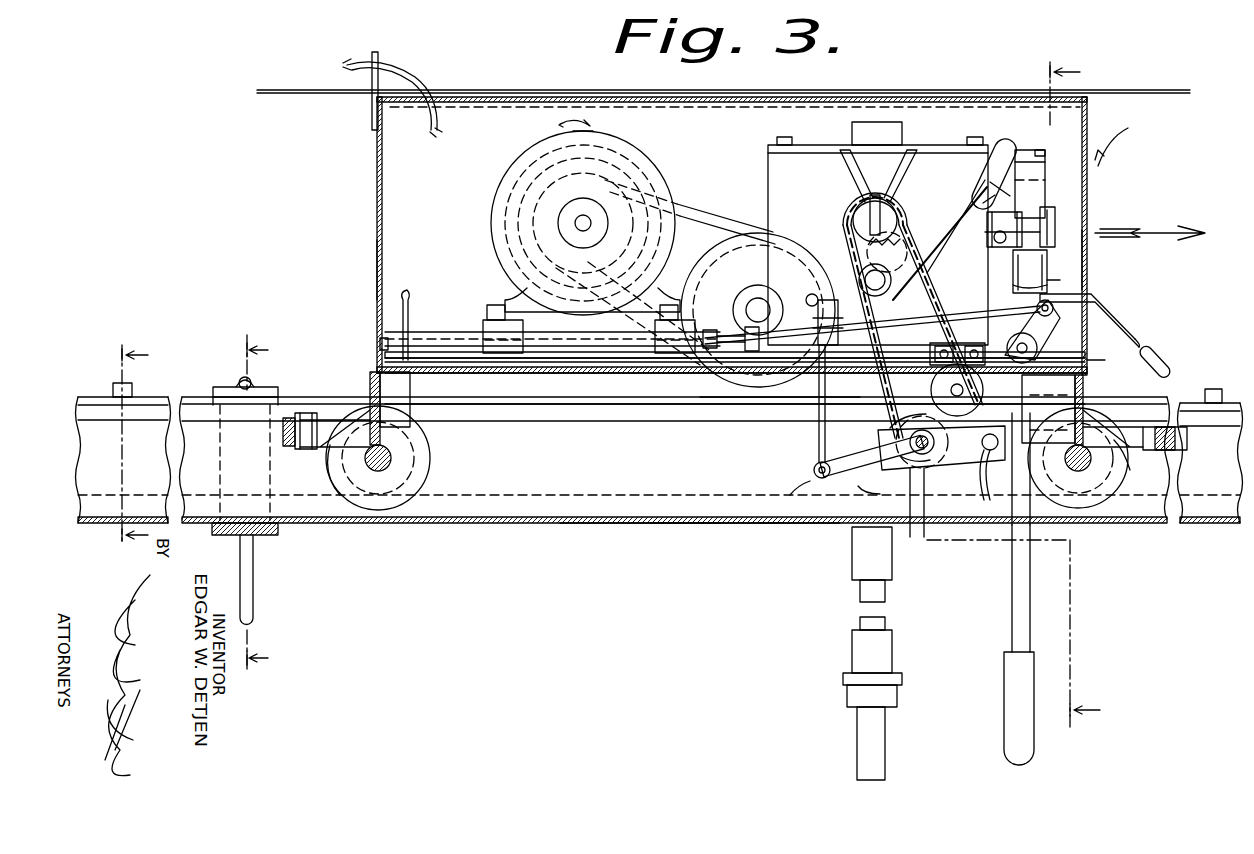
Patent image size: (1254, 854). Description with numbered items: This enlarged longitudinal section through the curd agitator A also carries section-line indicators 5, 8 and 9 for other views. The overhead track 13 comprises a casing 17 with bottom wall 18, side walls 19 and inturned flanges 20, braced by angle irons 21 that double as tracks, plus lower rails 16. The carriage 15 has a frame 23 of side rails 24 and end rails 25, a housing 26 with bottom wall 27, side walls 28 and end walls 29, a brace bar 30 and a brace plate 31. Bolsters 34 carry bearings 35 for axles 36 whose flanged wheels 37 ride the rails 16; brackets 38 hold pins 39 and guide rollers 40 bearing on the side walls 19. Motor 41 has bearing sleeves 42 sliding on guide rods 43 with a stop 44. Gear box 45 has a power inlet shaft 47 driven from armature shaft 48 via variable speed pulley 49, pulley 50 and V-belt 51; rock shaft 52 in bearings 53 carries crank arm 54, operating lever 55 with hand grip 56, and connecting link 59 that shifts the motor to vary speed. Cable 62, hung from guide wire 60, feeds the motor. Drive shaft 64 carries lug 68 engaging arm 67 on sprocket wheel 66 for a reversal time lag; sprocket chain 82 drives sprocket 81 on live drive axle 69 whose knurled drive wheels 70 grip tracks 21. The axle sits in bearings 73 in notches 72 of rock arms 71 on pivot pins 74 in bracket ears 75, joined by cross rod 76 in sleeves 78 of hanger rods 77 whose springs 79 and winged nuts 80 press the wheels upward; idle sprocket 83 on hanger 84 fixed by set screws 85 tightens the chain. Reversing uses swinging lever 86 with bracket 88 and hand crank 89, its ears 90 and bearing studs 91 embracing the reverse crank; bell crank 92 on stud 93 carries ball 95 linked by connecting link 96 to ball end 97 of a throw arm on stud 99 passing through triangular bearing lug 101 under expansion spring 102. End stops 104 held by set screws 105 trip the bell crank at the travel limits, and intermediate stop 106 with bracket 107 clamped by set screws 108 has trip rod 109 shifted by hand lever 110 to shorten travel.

The section line 5 is at (1013, 393).
The section line 8 is at (245, 503).
The section line 9 is at (124, 446).
The overhead track 13 is at (545, 526).
The carriage 15 is at (372, 261).
The rails 16 is at (635, 525).
The casing 17 is at (745, 525).
The bottom wall 18 is at (780, 530).
The side walls 19 is at (690, 525).
The top inturned flanges 20 is at (572, 392).
The angle irons 21 is at (640, 430).
The bottom open frame 23 is at (375, 330).
The side rails 24 is at (455, 378).
The end rails 25 is at (1090, 358).
The housing 26 is at (1098, 269).
The bottom wall 27 is at (690, 378).
The side walls 28 is at (382, 210).
The end walls 29 is at (1088, 192).
The brace bar 30 is at (468, 314).
The brace plate 31 is at (780, 405).
The bolsters 34 is at (1092, 378).
The bearings 35 is at (1088, 456).
The axles 36 is at (1066, 468).
The flanged carriage wheels 37 is at (1125, 478).
The brackets 38 is at (1123, 453).
The upright pins 39 is at (1187, 407).
The guide rollers 40 is at (1189, 440).
The electric motor 41 is at (636, 156).
The bearing sleeves 42 is at (664, 358).
The guide rods 43 is at (588, 352).
The stop 44 is at (735, 352).
The gear box 45 is at (770, 166).
The power inlet shaft 47 is at (763, 306).
The armature shaft 48 is at (590, 224).
The variable speed pulley 49 is at (780, 266).
The pulley 50 is at (535, 206).
The V-shaped pulley belt 51 is at (745, 185).
The rock shaft 52 is at (1034, 350).
The bearings 53 is at (1118, 325).
The crank arm 54 is at (1102, 298).
The operating lever 55 is at (1010, 584).
The hand grip 56 is at (1007, 674).
The connecting link 59 is at (1020, 310).
The guide wire 60 is at (1172, 92).
The cable 62 is at (430, 68).
The main drive shaft 64 is at (895, 206).
The sprocket wheel 66 is at (892, 236).
The arm 67 is at (865, 209).
The lug 68 is at (905, 190).
The live drive axle 69 is at (931, 462).
The drive wheels 70 is at (903, 525).
The rock arms 71 is at (868, 464).
The notches 72 is at (950, 462).
The bearings 73 is at (883, 437).
The pivot pins 74 is at (983, 494).
The bracket ears 75 is at (1014, 491).
The cross rod 76 is at (812, 470).
The hanger rods 77 is at (811, 444).
The sleeves 78 is at (815, 500).
The expansion coil springs 79 is at (815, 312).
The winged nuts 80 is at (858, 274).
The drive sprocket 81 is at (929, 370).
The sprocket chain 82 is at (934, 294).
The idle sprocket 83 is at (1035, 322).
The hanger 84 is at (936, 358).
The set screws 85 is at (928, 354).
The swinging lever 86 is at (1045, 211).
The depending bracket 88 is at (1056, 252).
The hand crank 89 is at (1162, 348).
The spaced ears 90 is at (992, 241).
The bearing studs 91 is at (1048, 276).
The bell crank 92 is at (950, 260).
The stud 93 is at (942, 290).
The ball 95 is at (1044, 180).
The connecting link 96 is at (1046, 162).
The ball end 97 is at (1015, 148).
The stud 99 is at (1058, 232).
The triangular bearing lug 101 is at (1044, 150).
The expansion spring 102 is at (985, 185).
The end stops 104 is at (1218, 386).
The set screws 105 is at (118, 425).
The intermediate stop 106 is at (288, 381).
The bracket 107 is at (242, 384).
The set screws 108 is at (244, 543).
The trip rod 109 is at (252, 380).
The hand lever 110 is at (253, 581).
The agitator A is at (1121, 138).